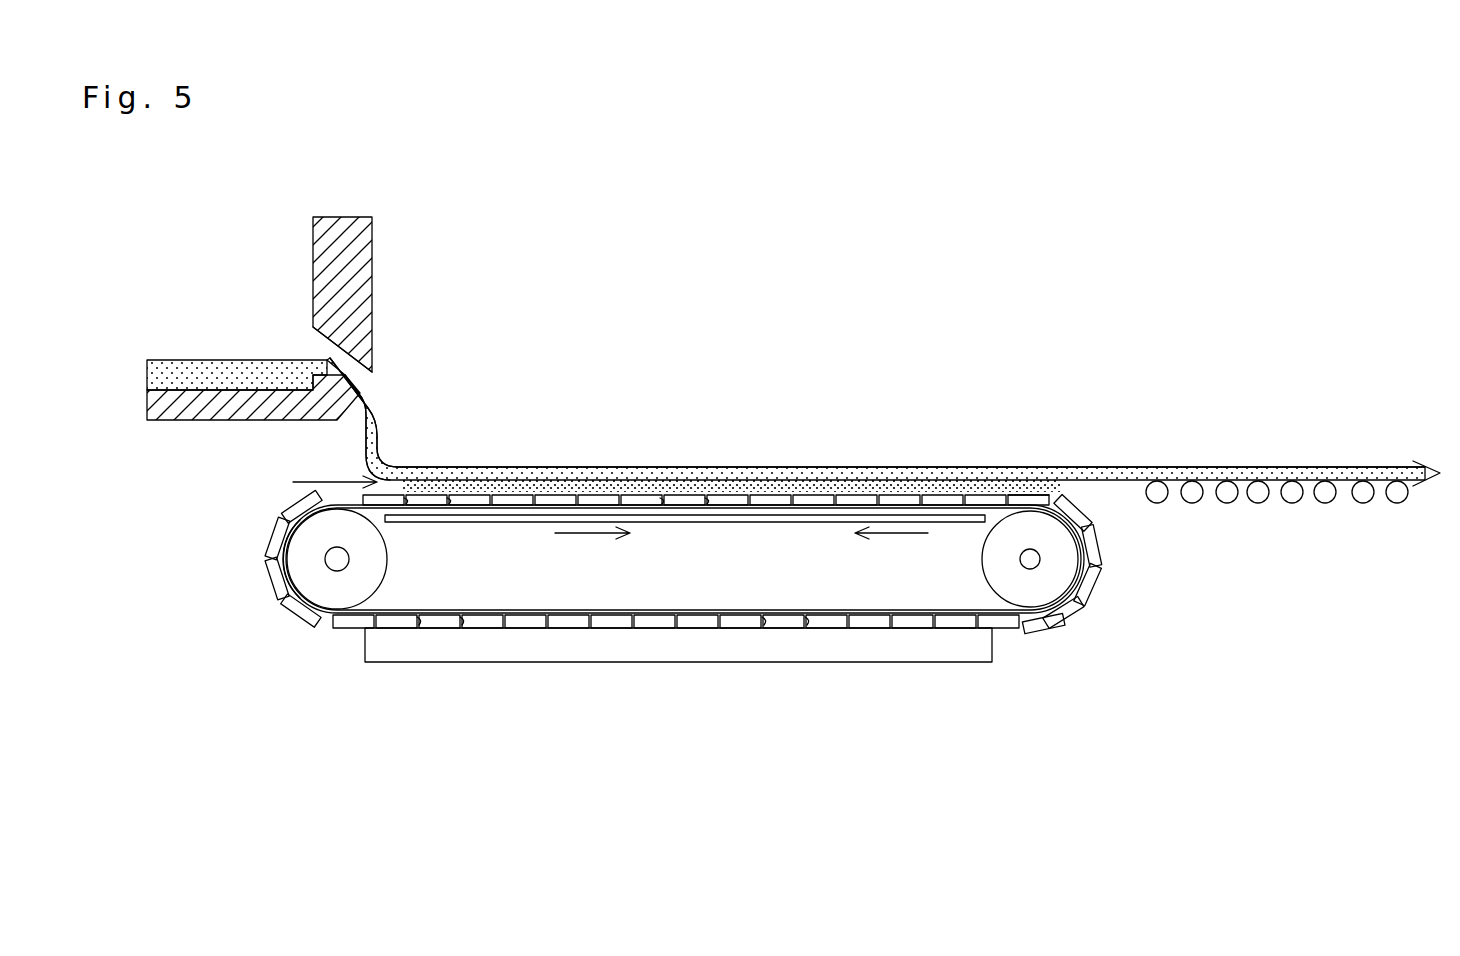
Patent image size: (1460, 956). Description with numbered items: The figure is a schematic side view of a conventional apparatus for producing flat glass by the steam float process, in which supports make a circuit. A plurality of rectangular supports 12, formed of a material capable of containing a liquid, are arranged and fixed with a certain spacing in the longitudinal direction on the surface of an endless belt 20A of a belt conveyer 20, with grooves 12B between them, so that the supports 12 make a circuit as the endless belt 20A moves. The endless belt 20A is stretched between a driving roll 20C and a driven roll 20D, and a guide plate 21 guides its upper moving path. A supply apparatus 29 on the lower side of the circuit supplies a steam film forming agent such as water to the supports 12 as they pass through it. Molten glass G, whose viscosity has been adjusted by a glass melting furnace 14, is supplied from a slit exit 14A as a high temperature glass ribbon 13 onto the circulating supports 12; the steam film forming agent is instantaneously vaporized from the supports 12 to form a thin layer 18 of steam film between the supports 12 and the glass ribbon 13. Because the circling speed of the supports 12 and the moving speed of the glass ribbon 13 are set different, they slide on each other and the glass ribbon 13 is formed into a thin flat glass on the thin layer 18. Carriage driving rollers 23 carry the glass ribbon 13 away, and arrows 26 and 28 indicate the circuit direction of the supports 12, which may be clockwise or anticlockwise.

The glass melting furnace 14 is at (268, 268).
The slit exit 14A is at (340, 360).
The molten glass G is at (207, 370).
The glass ribbon 13 is at (725, 472).
The supports 12 is at (602, 498).
The grooves 12B is at (713, 497).
The thin layer of steam film 18 is at (1000, 472).
The belt conveyer 20 is at (692, 572).
The endless belt 20A is at (297, 545).
The driving roll 20C is at (1000, 565).
The driven roll 20D is at (352, 578).
The guide plate 21 is at (470, 525).
The circuit direction of the supports 26 is at (590, 538).
The circuit direction of the supports 28 is at (905, 538).
The supply apparatus 29 is at (553, 640).
The carriage driving rollers 23 is at (1323, 507).